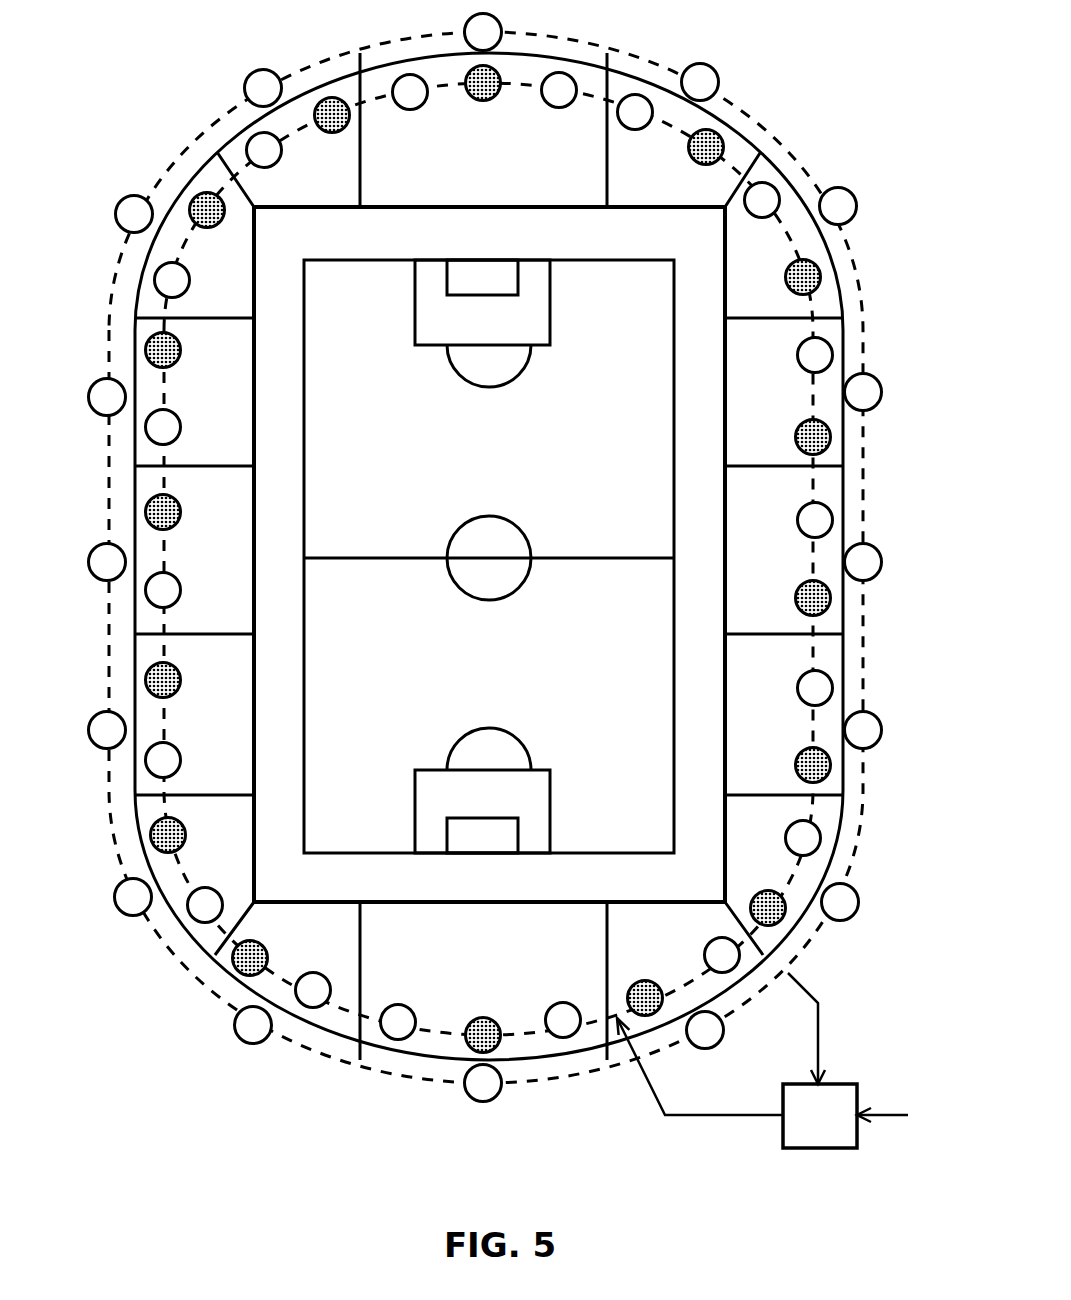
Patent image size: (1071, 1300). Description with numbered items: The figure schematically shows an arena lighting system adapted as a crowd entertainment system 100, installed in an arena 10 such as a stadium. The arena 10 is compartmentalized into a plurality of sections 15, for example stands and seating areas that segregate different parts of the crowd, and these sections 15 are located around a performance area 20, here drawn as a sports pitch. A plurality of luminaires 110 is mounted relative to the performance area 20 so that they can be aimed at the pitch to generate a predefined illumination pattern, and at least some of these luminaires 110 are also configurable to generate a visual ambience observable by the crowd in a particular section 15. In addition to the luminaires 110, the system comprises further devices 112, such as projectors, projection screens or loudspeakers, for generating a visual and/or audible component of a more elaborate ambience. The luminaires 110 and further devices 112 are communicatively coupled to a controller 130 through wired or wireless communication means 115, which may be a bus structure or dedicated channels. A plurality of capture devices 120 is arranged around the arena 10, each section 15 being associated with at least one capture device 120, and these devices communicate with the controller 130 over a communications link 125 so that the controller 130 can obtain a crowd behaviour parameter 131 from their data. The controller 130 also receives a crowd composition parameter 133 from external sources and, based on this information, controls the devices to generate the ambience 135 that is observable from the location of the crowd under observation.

The arena 10 is at (377, 1047).
The sections 15 is at (200, 712).
The performance area 20 is at (503, 878).
The crowd entertainment system 100 is at (473, 603).
The luminaires 110 is at (193, 918).
The further devices 112 is at (170, 840).
The communication means 115 is at (448, 1032).
The capture devices 120 is at (250, 1027).
The communications link 125 is at (582, 1076).
The controller 130 is at (790, 1125).
The crowd behaviour parameter 131 is at (822, 1037).
The crowd composition parameter 133 is at (893, 1118).
The ambience 135 is at (773, 1115).